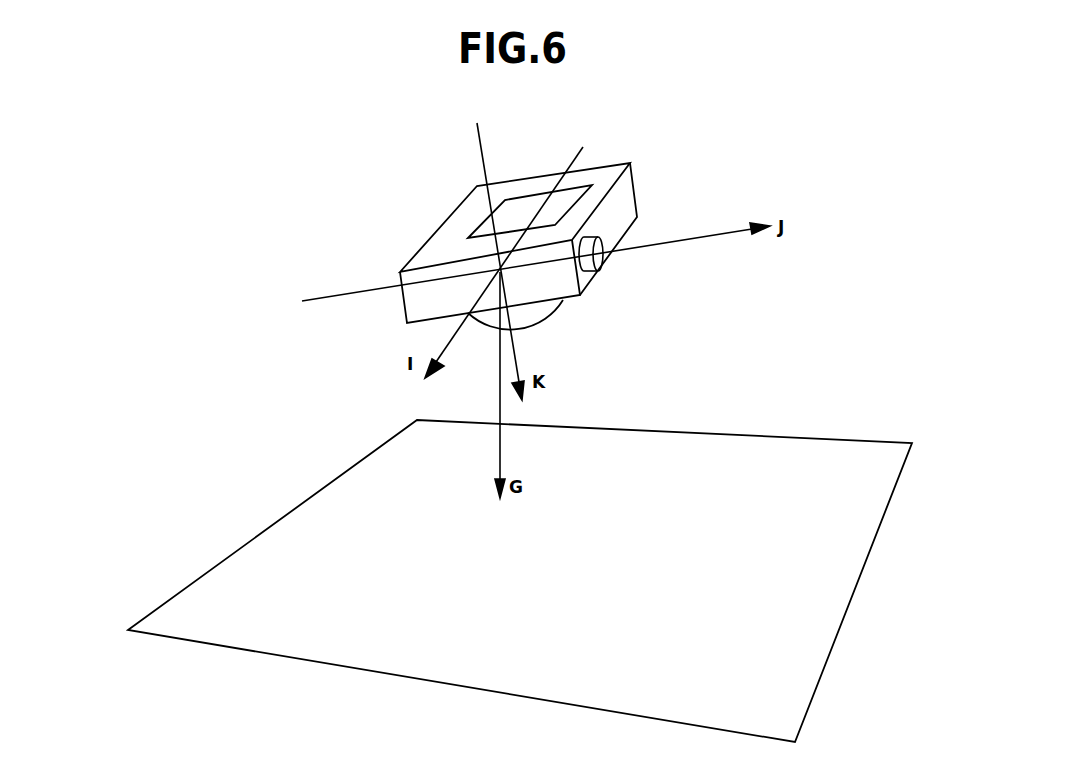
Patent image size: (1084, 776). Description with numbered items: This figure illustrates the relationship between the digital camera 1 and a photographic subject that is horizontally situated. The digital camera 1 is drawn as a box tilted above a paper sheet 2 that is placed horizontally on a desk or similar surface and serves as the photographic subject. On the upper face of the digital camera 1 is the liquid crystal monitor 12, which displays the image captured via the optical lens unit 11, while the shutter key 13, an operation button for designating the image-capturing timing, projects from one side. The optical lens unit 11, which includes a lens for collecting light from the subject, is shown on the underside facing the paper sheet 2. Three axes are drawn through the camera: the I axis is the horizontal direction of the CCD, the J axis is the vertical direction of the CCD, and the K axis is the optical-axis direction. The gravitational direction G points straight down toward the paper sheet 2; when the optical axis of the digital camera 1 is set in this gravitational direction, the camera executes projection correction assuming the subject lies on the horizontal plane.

The digital camera 1 is at (642, 158).
The paper sheet 2 is at (830, 460).
The optical lens unit 11 is at (552, 310).
The liquid crystal monitor 12 is at (527, 197).
The shutter key 13 is at (604, 254).